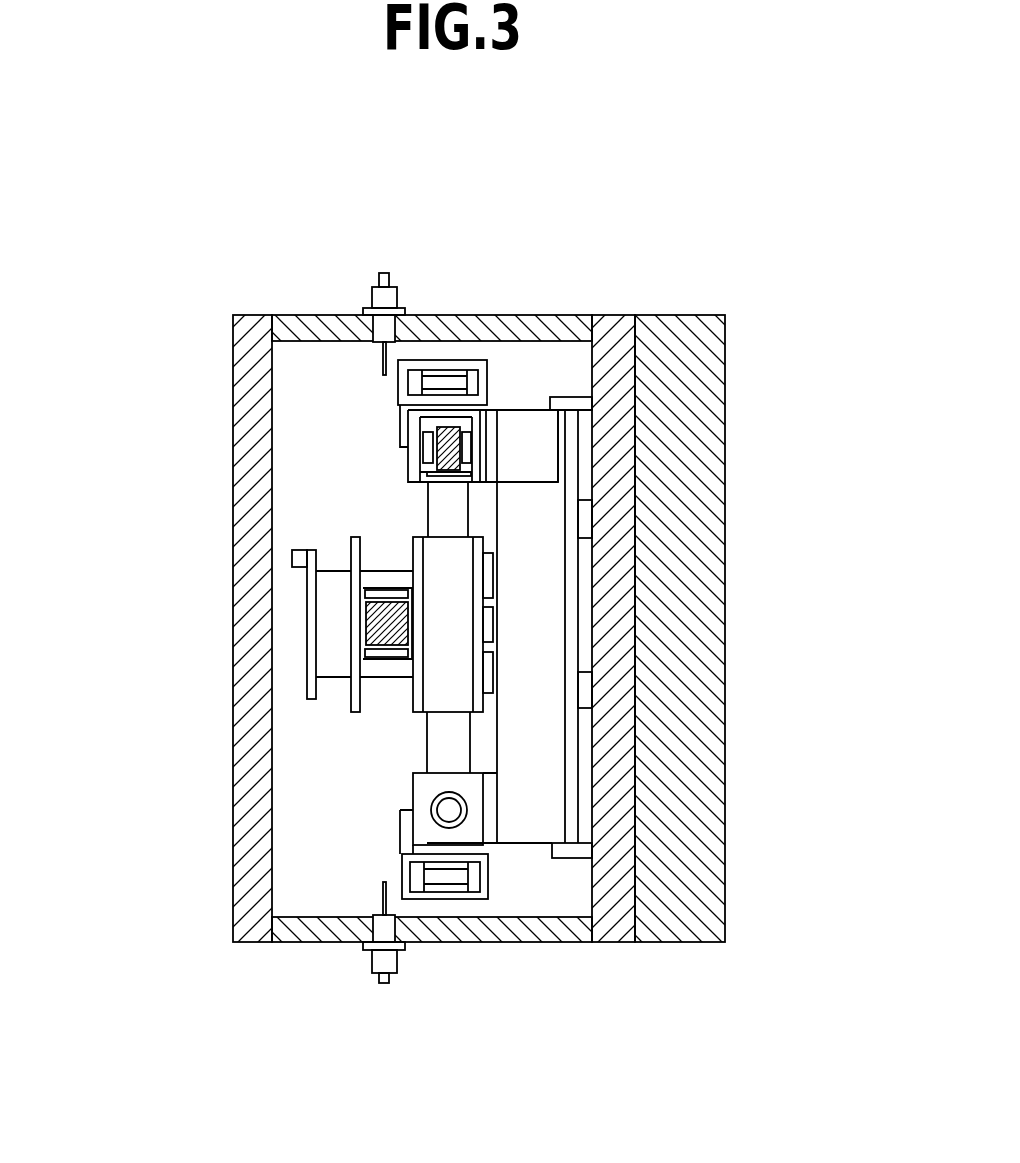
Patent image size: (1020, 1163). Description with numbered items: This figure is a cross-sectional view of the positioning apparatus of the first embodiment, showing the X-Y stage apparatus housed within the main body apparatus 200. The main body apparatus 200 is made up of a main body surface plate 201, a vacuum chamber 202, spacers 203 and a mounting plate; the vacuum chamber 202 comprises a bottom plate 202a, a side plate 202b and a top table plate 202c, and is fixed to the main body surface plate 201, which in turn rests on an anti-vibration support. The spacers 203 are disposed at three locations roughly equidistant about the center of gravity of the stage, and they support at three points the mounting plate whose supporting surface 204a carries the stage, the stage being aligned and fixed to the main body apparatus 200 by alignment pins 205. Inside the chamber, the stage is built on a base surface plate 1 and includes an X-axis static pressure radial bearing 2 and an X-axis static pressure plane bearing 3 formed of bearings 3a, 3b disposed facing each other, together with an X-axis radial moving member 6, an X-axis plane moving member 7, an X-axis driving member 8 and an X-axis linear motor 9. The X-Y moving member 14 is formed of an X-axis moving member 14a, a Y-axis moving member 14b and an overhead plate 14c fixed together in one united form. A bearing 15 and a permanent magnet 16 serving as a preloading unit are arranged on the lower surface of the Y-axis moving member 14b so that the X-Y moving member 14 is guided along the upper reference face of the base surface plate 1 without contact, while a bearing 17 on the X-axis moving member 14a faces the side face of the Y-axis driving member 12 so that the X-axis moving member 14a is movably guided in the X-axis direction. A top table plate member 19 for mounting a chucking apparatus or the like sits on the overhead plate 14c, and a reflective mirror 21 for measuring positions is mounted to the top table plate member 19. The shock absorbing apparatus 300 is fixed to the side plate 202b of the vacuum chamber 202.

The base surface plate 1 is at (617, 543).
The X-axis static pressure radial bearing 2 is at (427, 785).
The X-axis static pressure plane bearing 3 is at (341, 355).
The bearing 3a is at (418, 438).
The bearing 3b is at (427, 457).
The X-axis radial moving member 6 is at (430, 812).
The X-axis plane moving member 7 is at (466, 458).
The X-axis driving member 8 is at (450, 743).
The X-axis linear motor 9 is at (461, 350).
The Y-axis driving member 12 is at (377, 623).
The X-Y moving member 14 is at (253, 657).
The X-axis moving member 14a is at (384, 676).
The Y-axis moving member 14b is at (432, 690).
The overhead plate 14c is at (352, 688).
The bearing 15 is at (490, 575).
The permanent magnet 16 is at (490, 623).
The bearing 17 is at (365, 595).
The top table plate member 19 is at (310, 580).
The reflective mirror 21 is at (297, 558).
The main body apparatus 200 is at (469, 668).
The main body surface plate 201 is at (683, 925).
The vacuum chamber 202 is at (469, 642).
The bottom plate 202a is at (613, 848).
The side plate 202b is at (313, 325).
The top table plate 202c is at (255, 442).
The spacer 203 is at (587, 520).
The supporting surface 204a is at (572, 470).
The alignment pin 205 is at (573, 405).
The shock absorbing apparatus 300 is at (400, 270).